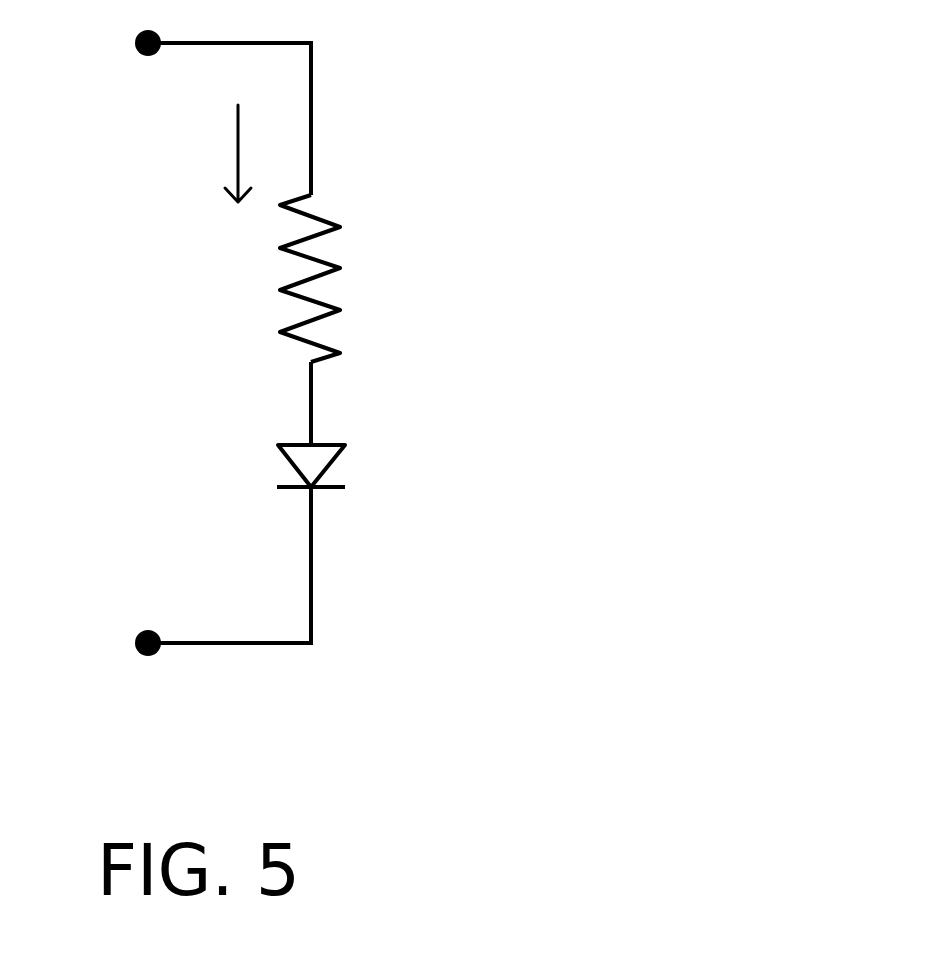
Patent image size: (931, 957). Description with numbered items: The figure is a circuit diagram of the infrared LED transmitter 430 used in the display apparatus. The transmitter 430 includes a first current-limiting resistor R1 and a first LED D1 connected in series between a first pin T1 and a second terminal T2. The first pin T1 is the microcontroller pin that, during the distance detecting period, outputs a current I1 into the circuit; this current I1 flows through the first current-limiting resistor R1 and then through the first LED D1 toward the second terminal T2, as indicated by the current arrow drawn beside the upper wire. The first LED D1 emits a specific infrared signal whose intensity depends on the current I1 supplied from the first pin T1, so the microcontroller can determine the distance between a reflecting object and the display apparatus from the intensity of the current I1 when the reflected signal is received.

The infrared LED transmitter 430 is at (663, 246).
The first pin T1 is at (96, 38).
The second terminal T2 is at (95, 643).
The current I1 is at (224, 125).
The first current-limiting resistor R1 is at (361, 278).
The first LED D1 is at (353, 468).